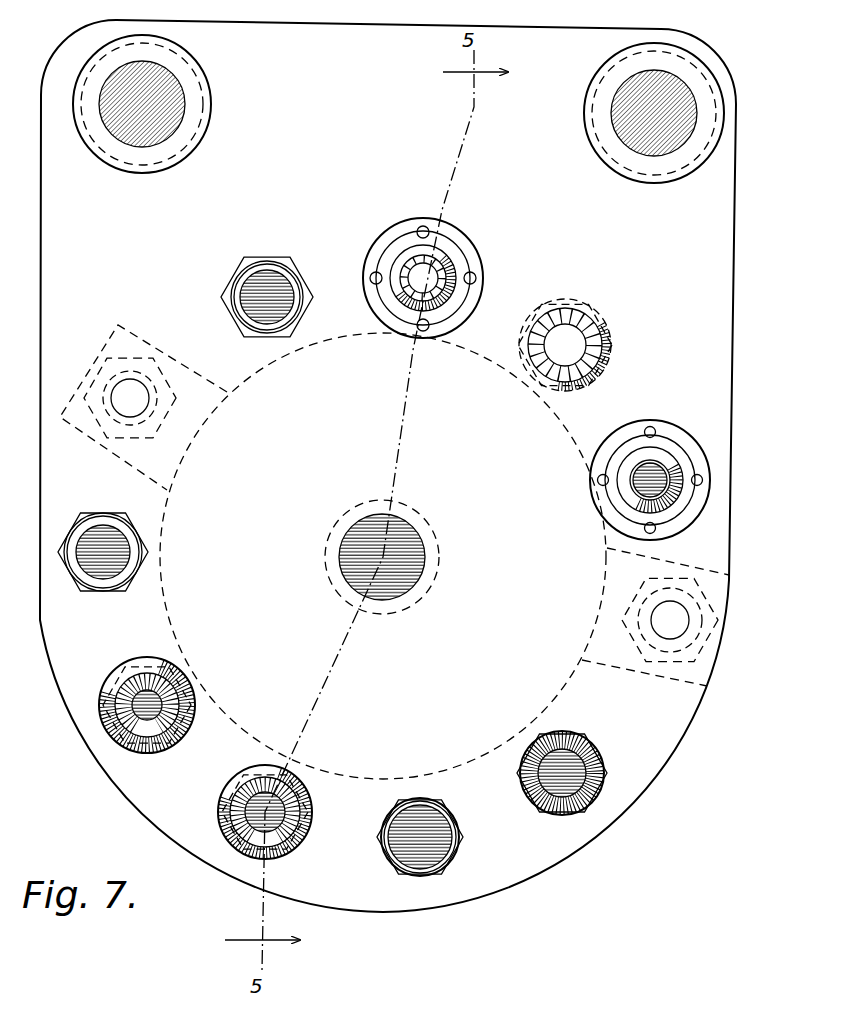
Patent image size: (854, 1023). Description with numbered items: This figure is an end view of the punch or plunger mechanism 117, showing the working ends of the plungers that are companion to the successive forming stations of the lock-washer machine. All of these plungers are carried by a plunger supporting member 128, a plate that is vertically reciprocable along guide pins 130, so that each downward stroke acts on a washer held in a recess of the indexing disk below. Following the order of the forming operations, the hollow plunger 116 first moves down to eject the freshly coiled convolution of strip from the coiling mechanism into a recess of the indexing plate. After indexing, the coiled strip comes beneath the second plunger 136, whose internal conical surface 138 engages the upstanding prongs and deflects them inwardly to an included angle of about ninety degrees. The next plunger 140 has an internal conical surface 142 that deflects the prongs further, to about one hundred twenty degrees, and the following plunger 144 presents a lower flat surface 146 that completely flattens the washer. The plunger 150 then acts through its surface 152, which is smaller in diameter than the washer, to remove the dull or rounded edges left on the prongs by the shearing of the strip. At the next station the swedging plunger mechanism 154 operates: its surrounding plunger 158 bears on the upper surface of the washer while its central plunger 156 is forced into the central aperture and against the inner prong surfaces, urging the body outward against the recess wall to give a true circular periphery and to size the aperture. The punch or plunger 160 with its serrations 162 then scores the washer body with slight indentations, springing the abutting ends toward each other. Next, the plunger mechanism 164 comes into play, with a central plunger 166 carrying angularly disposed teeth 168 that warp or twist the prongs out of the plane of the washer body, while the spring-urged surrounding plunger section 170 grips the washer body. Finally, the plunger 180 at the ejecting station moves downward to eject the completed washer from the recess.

The hollow plunger 116 is at (75, 563).
The plunger mechanism 117 is at (130, 812).
The plunger supporting member 128 is at (578, 830).
The guide pins 130 is at (173, 110).
The second plunger 136 is at (179, 696).
The internal conical surface 138 is at (172, 700).
The plunger 140 is at (289, 794).
The internal conical surface 142 is at (290, 813).
The plunger 144 is at (441, 812).
The lower flat surface 146 is at (427, 827).
The plunger 150 is at (590, 770).
The surface 152 is at (603, 777).
The plunger mechanism 154 is at (621, 467).
The central plunger 156 is at (653, 473).
The surrounding plunger 158 is at (625, 488).
The punch or plunger 160 is at (599, 345).
The serrations 162 is at (613, 342).
The plunger mechanism 164 is at (459, 270).
The central plunger 166 is at (433, 252).
The angularly disposed teeth 168 is at (447, 277).
The surrounding plunger section 170 is at (463, 308).
The plunger 180 is at (270, 270).